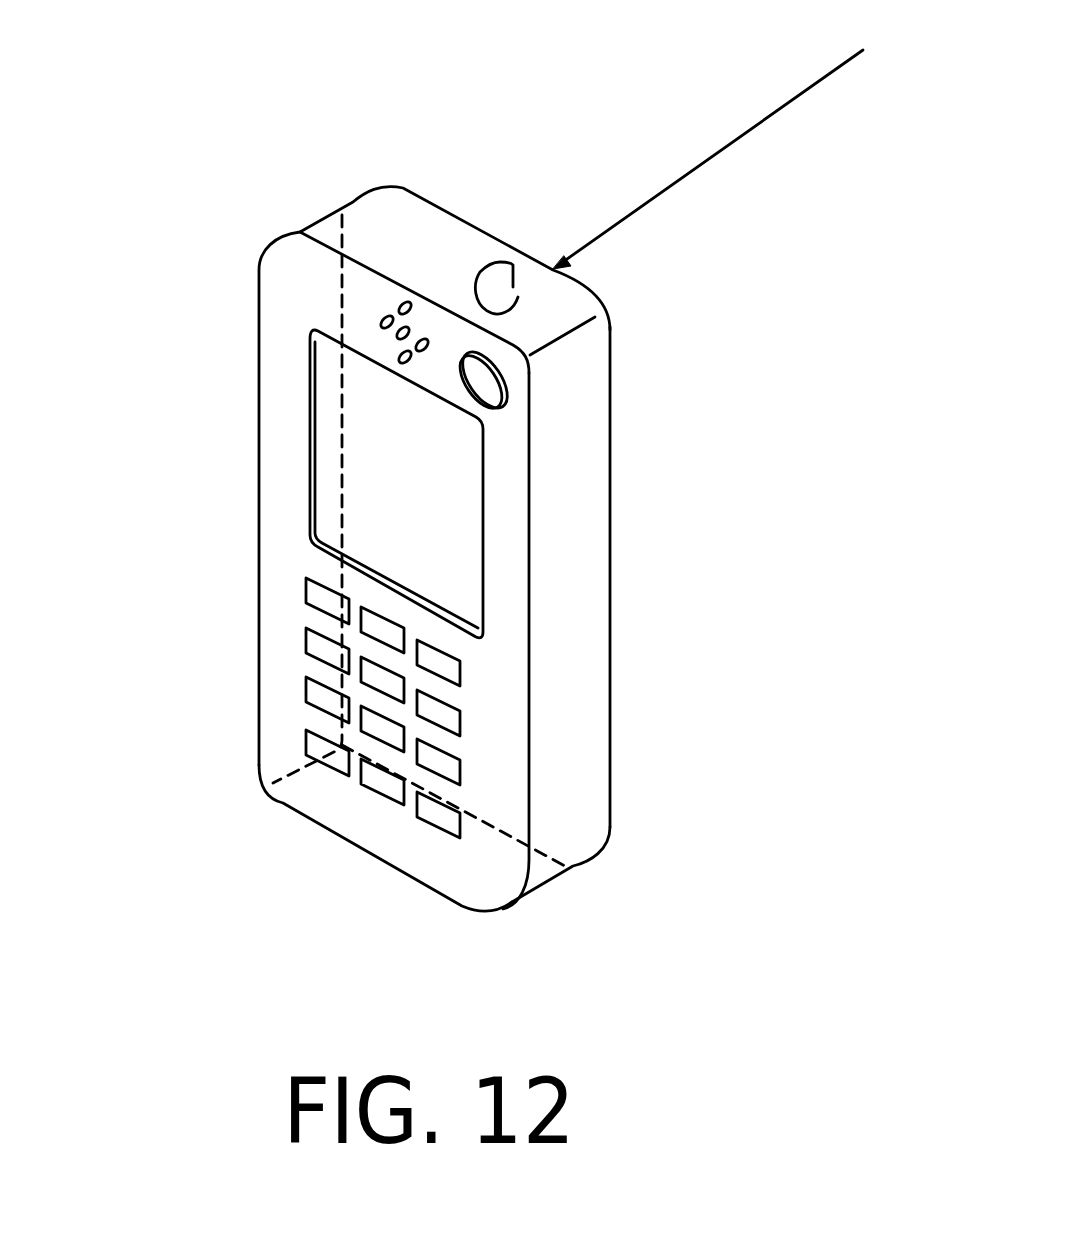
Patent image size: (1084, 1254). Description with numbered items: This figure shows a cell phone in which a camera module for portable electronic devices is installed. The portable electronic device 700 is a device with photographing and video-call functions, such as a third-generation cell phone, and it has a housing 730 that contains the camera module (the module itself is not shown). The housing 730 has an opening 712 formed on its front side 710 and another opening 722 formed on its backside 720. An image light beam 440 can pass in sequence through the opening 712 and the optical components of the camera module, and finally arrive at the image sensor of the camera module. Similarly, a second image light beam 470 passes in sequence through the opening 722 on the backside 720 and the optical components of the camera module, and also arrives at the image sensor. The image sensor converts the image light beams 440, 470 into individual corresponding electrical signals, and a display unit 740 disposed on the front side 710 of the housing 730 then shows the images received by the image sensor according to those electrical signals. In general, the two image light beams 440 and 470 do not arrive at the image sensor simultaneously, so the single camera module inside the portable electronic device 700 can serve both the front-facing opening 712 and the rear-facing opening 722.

The portable electronic device 700 is at (866, 139).
The front side 710 is at (275, 455).
The opening 712 is at (528, 426).
The backside 720 is at (613, 532).
The opening 722 is at (533, 258).
The housing 730 is at (563, 713).
The display unit 740 is at (373, 408).
The image light beam 440 is at (493, 390).
The image light beam 470 is at (748, 139).